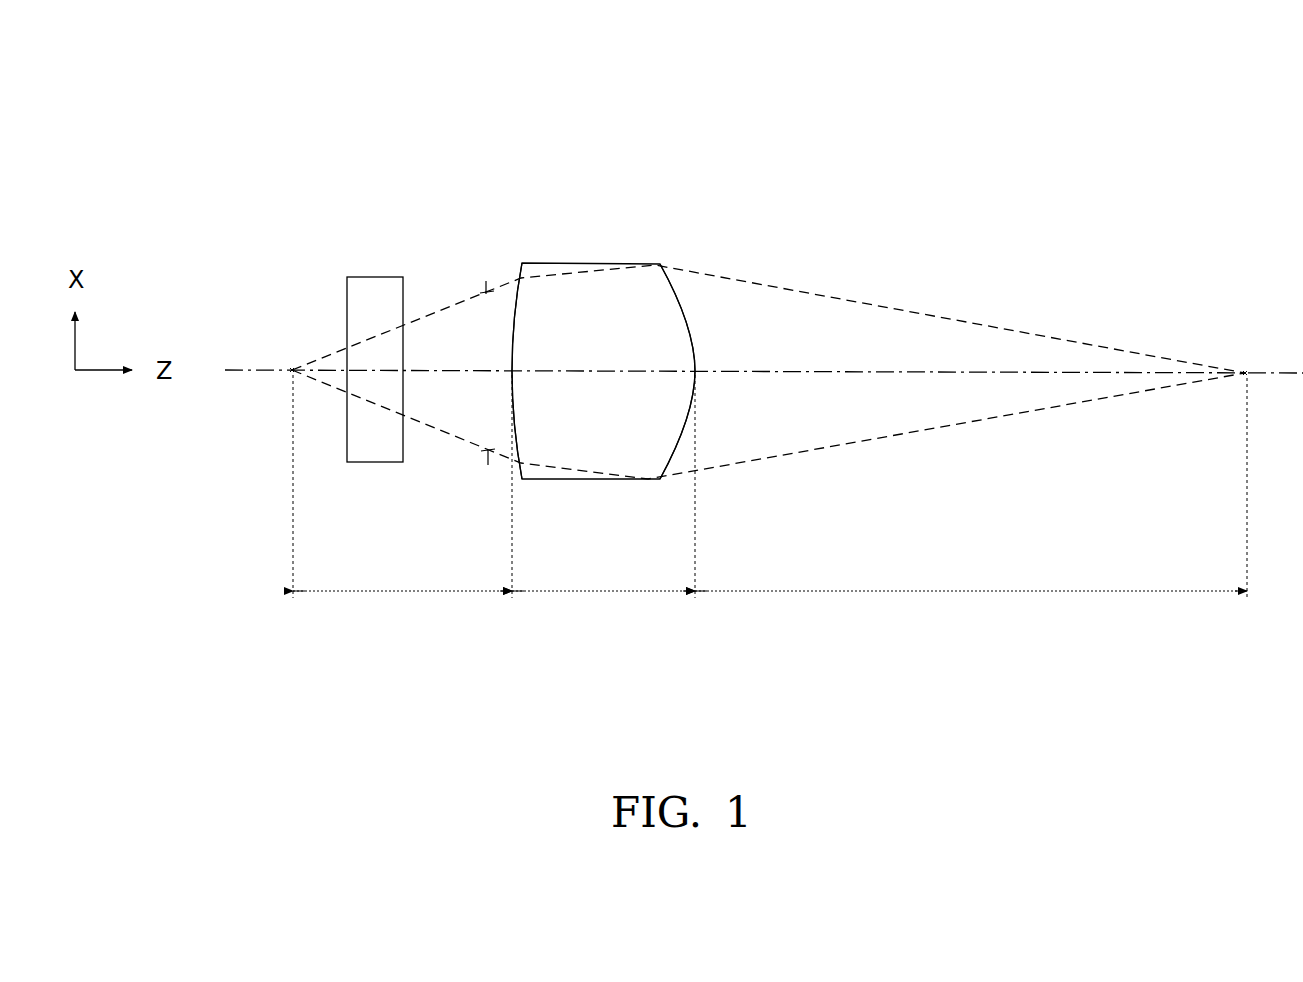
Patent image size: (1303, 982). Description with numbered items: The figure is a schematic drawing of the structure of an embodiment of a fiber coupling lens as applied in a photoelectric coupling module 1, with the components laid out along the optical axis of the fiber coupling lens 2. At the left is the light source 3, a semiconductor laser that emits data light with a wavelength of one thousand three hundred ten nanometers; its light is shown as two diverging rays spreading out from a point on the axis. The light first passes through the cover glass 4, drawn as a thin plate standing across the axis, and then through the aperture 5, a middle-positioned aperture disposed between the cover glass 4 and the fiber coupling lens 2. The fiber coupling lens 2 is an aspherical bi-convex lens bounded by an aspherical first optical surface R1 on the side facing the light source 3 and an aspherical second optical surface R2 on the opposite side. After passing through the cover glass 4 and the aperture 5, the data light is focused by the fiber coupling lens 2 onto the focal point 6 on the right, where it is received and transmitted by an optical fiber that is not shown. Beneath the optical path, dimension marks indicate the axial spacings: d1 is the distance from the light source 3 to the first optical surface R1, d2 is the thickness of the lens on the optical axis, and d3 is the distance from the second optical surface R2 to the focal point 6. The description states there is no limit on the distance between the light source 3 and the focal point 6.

The photoelectric coupling module 1 is at (953, 191).
The fiber coupling lens 2 is at (597, 263).
The light source 3 is at (292, 370).
The cover glass 4 is at (375, 277).
The aperture 5 is at (487, 289).
The focal point 6 is at (1246, 373).
The first optical surface R1 is at (520, 271).
The second optical surface R2 is at (678, 298).
The distance from light source to lens first surface d1 is at (402, 582).
The thickness of the lens on optical axis d2 is at (603, 582).
The distance from lens second surface to focal point d3 is at (971, 582).